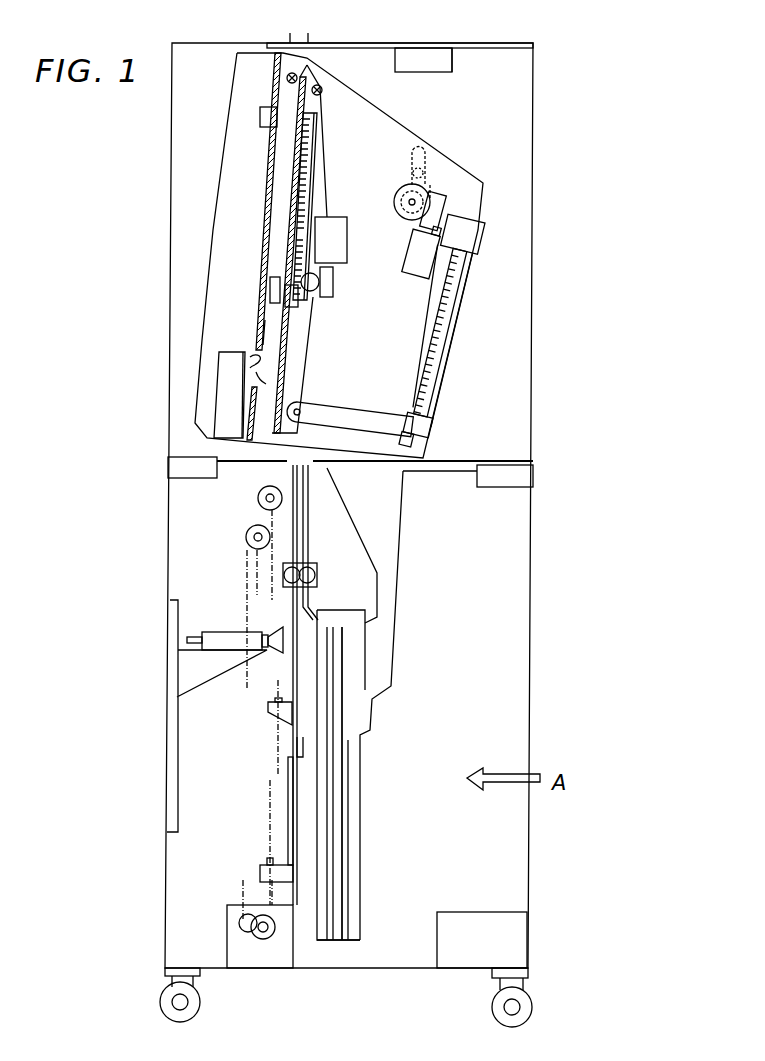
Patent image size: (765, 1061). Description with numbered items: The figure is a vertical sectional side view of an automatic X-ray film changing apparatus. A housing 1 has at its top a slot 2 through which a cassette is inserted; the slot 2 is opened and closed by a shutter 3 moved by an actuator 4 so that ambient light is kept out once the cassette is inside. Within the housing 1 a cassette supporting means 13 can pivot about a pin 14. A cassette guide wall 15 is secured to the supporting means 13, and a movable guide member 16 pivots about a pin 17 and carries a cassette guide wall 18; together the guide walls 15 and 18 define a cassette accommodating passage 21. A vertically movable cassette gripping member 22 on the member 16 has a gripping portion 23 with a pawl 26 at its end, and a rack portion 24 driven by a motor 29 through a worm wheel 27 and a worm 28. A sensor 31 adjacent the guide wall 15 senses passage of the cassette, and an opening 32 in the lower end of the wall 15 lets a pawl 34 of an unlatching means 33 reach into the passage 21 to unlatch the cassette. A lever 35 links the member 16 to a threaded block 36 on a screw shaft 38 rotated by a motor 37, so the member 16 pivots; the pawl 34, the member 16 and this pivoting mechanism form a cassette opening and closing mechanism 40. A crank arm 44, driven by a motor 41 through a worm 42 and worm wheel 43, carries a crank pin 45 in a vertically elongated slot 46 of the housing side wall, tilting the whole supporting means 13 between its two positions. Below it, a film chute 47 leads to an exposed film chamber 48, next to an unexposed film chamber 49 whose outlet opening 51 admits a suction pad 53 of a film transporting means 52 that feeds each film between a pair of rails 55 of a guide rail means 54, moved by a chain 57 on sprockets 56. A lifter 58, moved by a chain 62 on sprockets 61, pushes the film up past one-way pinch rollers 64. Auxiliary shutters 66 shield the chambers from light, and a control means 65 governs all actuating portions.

The housing 1 is at (517, 103).
The slot 2 is at (300, 34).
The shutter 3 is at (380, 43).
The actuator 4 is at (448, 58).
The cassette supporting means 13 is at (205, 247).
The pin 14 is at (290, 76).
The cassette guide wall 15 is at (267, 177).
The movable guide member 16 is at (298, 348).
The pin 17 is at (323, 96).
The cassette guide wall 18 is at (307, 110).
The cassette accommodating passage 21 is at (273, 330).
The cassette gripping member 22 is at (295, 307).
The gripping portion 23 is at (270, 298).
The rack portion 24 is at (317, 182).
The pawl 26 is at (243, 232).
The worm wheel 27 is at (312, 292).
The worm 28 is at (335, 283).
The motor 29 is at (330, 227).
The sensor 31 is at (260, 114).
The opening 32 is at (255, 378).
The unlatching means 33 is at (222, 410).
The pawl 34 is at (257, 368).
The lever 35 is at (360, 420).
The threaded block 36 is at (424, 424).
The motor 37 is at (475, 238).
The screw shaft 38 is at (440, 340).
The cassette opening and closing mechanism 40 is at (447, 385).
The motor 41 is at (417, 275).
The worm 42 is at (438, 196).
The worm wheel 43 is at (401, 214).
The crank arm 44 is at (407, 165).
The crank pin 45 is at (420, 175).
The vertically elongated slot 46 is at (418, 150).
The film chute 47 is at (398, 522).
The exposed film chamber 48 is at (360, 855).
The unexposed film chamber 49 is at (323, 943).
The outlet opening 51 is at (315, 650).
The film transporting means 52 is at (213, 637).
The suction pad 53 is at (283, 632).
The guide rail means 54 is at (305, 563).
The rails 55 is at (270, 486).
The sprockets 56 is at (260, 503).
The chain 57 is at (278, 720).
The lifter 58 is at (290, 818).
The sprockets 61 is at (258, 537).
The chain 62 is at (243, 880).
The pinch rollers 64 is at (315, 563).
The control means 65 is at (467, 918).
The auxiliary shutters 66 is at (190, 467).